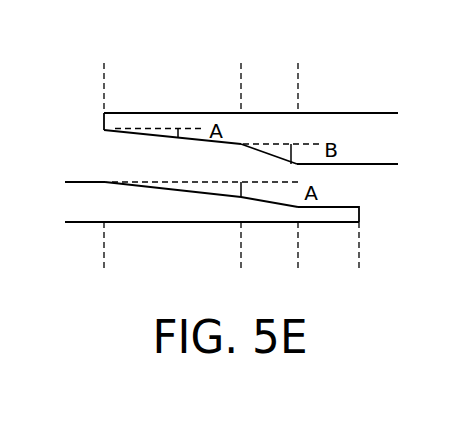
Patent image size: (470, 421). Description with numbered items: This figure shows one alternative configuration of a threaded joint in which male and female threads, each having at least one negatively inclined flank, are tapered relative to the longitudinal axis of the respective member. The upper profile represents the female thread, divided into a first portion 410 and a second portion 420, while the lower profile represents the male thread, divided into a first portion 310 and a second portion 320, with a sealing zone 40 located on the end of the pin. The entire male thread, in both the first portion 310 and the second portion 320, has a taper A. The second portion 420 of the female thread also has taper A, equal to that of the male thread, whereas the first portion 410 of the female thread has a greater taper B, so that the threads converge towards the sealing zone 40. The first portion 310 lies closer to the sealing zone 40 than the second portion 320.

The second portion of the female thread 420 is at (154, 98).
The first portion of the female thread 410 is at (249, 98).
The sealing zone 40 is at (316, 98).
The second portion of the male thread 320 is at (153, 256).
The first portion of the male thread 310 is at (250, 256).